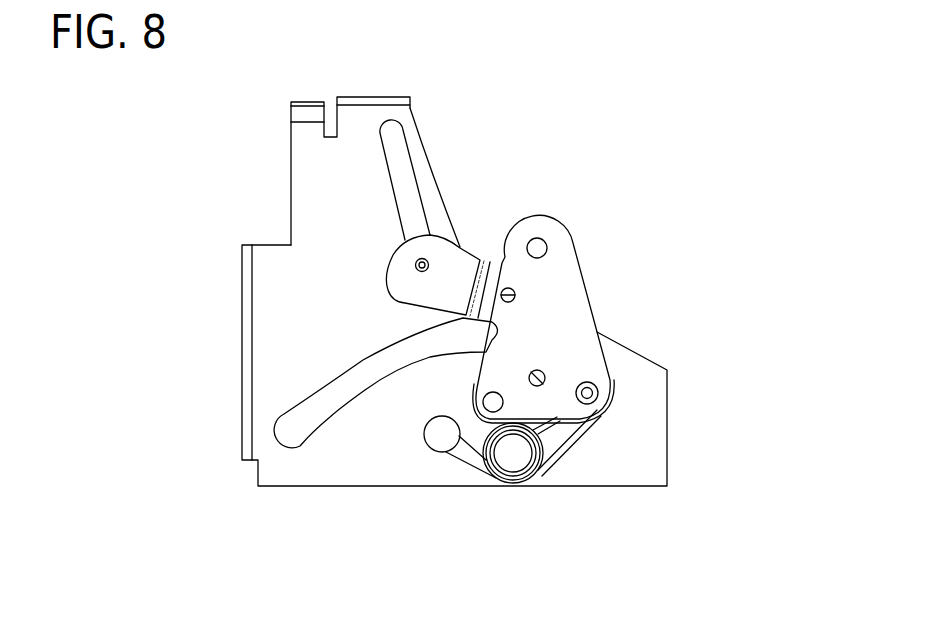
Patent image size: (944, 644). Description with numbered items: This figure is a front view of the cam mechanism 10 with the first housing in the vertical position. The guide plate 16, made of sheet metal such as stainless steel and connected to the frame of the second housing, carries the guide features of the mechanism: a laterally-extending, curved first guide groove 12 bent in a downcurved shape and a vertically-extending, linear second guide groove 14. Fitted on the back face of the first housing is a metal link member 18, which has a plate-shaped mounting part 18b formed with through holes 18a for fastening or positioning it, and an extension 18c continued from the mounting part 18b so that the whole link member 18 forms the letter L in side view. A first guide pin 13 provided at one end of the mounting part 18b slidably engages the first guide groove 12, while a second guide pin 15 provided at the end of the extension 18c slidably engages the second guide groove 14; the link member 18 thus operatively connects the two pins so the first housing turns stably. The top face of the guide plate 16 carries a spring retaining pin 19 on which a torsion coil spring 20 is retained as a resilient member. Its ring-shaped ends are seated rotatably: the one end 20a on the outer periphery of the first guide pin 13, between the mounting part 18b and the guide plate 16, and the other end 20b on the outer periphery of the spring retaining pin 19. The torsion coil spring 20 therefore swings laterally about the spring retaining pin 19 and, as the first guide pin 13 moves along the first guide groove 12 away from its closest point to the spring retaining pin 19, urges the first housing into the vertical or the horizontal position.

The cam mechanism 10 is at (655, 157).
The first guide groove 12 is at (339, 371).
The first guide pin 13 is at (598, 393).
The second guide groove 14 is at (405, 140).
The second guide pin 15 is at (425, 258).
The guide plate 16 is at (290, 151).
The link member 18 is at (567, 233).
The through holes 18a is at (538, 240).
The mounting part 18b is at (563, 280).
The extension 18c is at (468, 272).
The spring retaining pin 19 is at (437, 437).
The torsion coil spring 20 is at (522, 487).
The one end of the torsion coil spring 20a is at (593, 420).
The other end of the torsion coil spring 20b is at (442, 452).